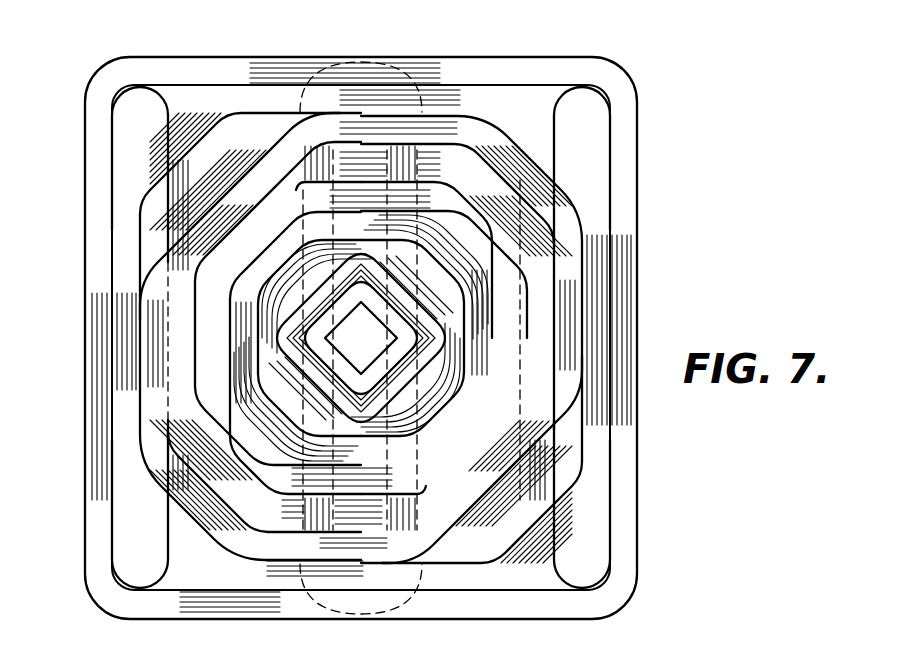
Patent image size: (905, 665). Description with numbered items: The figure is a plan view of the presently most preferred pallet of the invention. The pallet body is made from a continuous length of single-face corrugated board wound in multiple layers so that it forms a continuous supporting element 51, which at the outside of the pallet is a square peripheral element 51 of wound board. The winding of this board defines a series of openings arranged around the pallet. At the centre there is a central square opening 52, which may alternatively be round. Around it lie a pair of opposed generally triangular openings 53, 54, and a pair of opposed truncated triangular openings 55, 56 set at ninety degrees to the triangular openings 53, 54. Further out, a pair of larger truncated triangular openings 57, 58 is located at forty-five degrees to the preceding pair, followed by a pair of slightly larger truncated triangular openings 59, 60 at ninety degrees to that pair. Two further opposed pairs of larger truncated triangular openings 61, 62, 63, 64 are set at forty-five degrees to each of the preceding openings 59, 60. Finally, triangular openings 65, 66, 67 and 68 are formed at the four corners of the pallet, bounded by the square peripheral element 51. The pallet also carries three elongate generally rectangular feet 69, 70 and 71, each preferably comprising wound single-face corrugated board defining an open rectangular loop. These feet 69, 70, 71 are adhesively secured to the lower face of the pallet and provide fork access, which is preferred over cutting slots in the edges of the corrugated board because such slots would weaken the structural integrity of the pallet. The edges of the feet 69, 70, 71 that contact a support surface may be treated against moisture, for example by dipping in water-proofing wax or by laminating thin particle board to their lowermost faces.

The continuous supporting element 51 is at (620, 236).
The central square opening 52 is at (372, 351).
The triangular opening 53 is at (292, 380).
The triangular opening 54 is at (423, 280).
The truncated triangular opening 55 is at (437, 392).
The truncated triangular opening 56 is at (283, 278).
The larger truncated triangular opening 57 is at (210, 340).
The larger truncated triangular opening 58 is at (505, 322).
The slightly larger truncated triangular opening 59 is at (428, 160).
The slightly larger truncated triangular opening 60 is at (365, 515).
The larger truncated triangular opening 61 is at (215, 165).
The larger truncated triangular opening 62 is at (560, 208).
The larger truncated triangular opening 63 is at (228, 545).
The larger truncated triangular opening 64 is at (568, 458).
The corner triangular opening 65 is at (130, 118).
The corner triangular opening 66 is at (582, 128).
The corner triangular opening 67 is at (138, 555).
The corner triangular opening 68 is at (600, 540).
The foot 69 is at (535, 480).
The foot 70 is at (465, 530).
The foot 71 is at (212, 208).